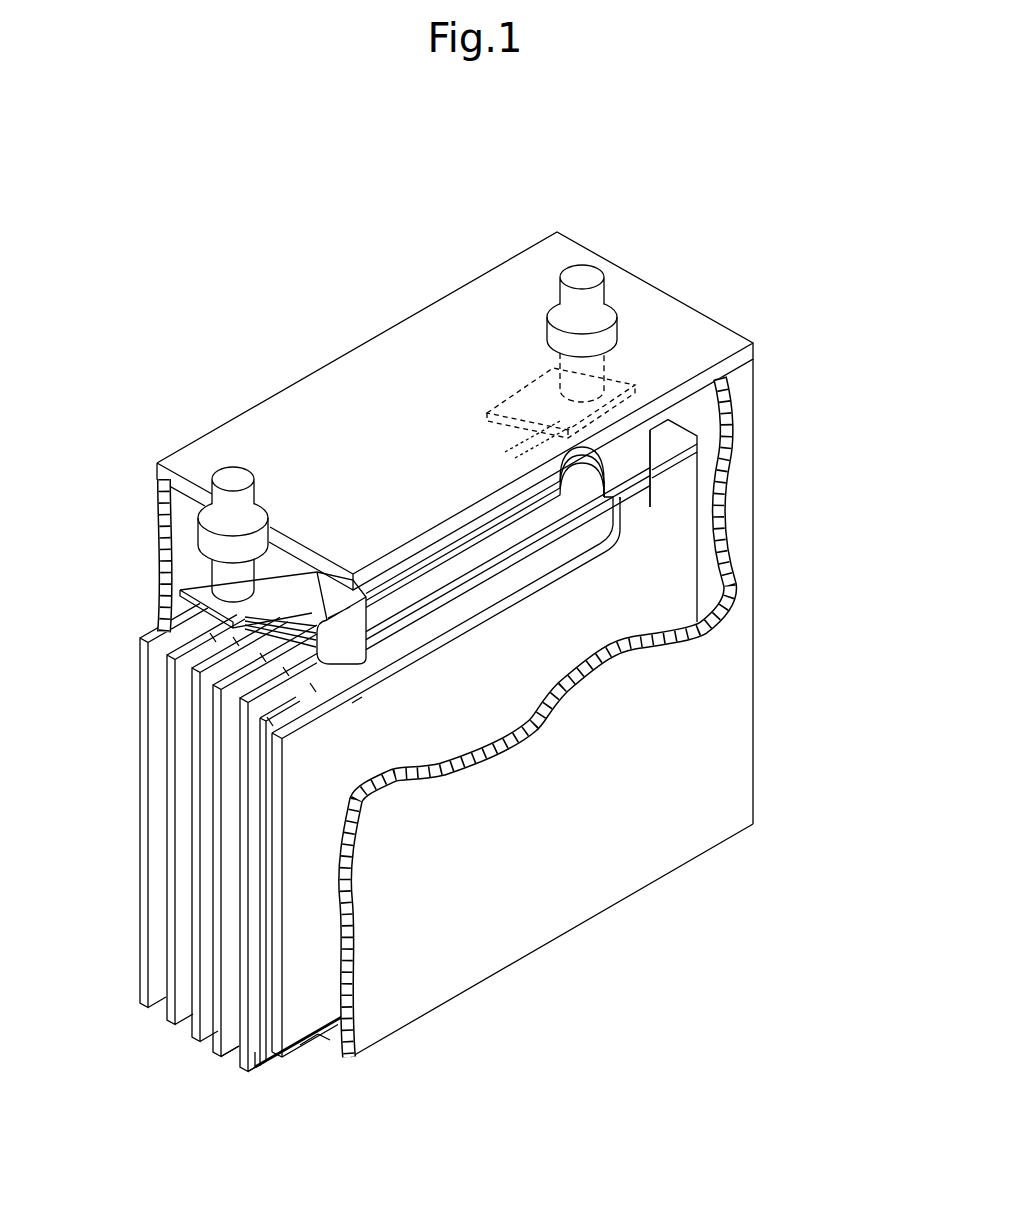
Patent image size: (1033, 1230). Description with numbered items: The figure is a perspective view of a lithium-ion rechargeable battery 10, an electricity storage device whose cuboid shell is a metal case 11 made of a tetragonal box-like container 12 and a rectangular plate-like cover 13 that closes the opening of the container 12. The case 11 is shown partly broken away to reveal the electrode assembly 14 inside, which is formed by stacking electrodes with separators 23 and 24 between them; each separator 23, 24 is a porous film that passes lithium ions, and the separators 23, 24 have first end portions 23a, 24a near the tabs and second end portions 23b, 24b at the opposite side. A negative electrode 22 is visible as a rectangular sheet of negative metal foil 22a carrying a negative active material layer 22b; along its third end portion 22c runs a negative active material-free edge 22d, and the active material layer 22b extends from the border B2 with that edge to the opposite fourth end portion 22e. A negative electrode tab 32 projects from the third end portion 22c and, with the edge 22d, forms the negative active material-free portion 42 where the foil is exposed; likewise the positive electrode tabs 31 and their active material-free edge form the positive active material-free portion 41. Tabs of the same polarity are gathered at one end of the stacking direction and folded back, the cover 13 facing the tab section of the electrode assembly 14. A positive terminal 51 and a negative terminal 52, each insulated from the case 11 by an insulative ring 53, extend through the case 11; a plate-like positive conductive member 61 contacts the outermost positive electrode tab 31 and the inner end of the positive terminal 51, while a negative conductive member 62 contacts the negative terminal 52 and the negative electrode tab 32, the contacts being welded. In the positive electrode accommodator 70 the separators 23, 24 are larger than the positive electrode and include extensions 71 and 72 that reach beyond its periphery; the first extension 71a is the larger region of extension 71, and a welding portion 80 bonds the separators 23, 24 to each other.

The rechargeable battery 10 is at (719, 214).
The case 11 is at (800, 318).
The container 12 is at (740, 381).
The cover 13 is at (718, 338).
The electrode assembly 14 is at (708, 463).
The negative electrode 22 is at (700, 551).
The negative metal foil 22a is at (272, 1047).
The negative active material layer 22b is at (443, 741).
The third end portion 22c is at (523, 583).
The negative active material-free edge 22d is at (547, 582).
The fourth end portion 22e is at (310, 1040).
The separator 23 is at (385, 786).
The positive electrode tab 23a is at (455, 583).
The second end portion of separator 23b is at (250, 1073).
The separator 24 is at (355, 779).
The negative electrode tab 24a is at (415, 607).
The second end portion of separator 24b is at (245, 1068).
The positive electrode tab 31 is at (320, 583).
The negative electrode tab 32 is at (633, 553).
The positive active material-free portion 41 is at (332, 593).
The negative active material-free portion 42 is at (548, 640).
The positive terminal 51 is at (233, 475).
The negative terminal 52 is at (570, 268).
The insulative ring 53 is at (263, 512).
The positive conductive member 61 is at (285, 560).
The negative conductive member 62 is at (510, 395).
The positive electrode accommodator 70 is at (156, 1017).
The extension 71 is at (310, 979).
The first extension 71a is at (448, 605).
The extension 72 is at (237, 1032).
The welding portion 80 is at (410, 630).
The border B2 is at (359, 700).